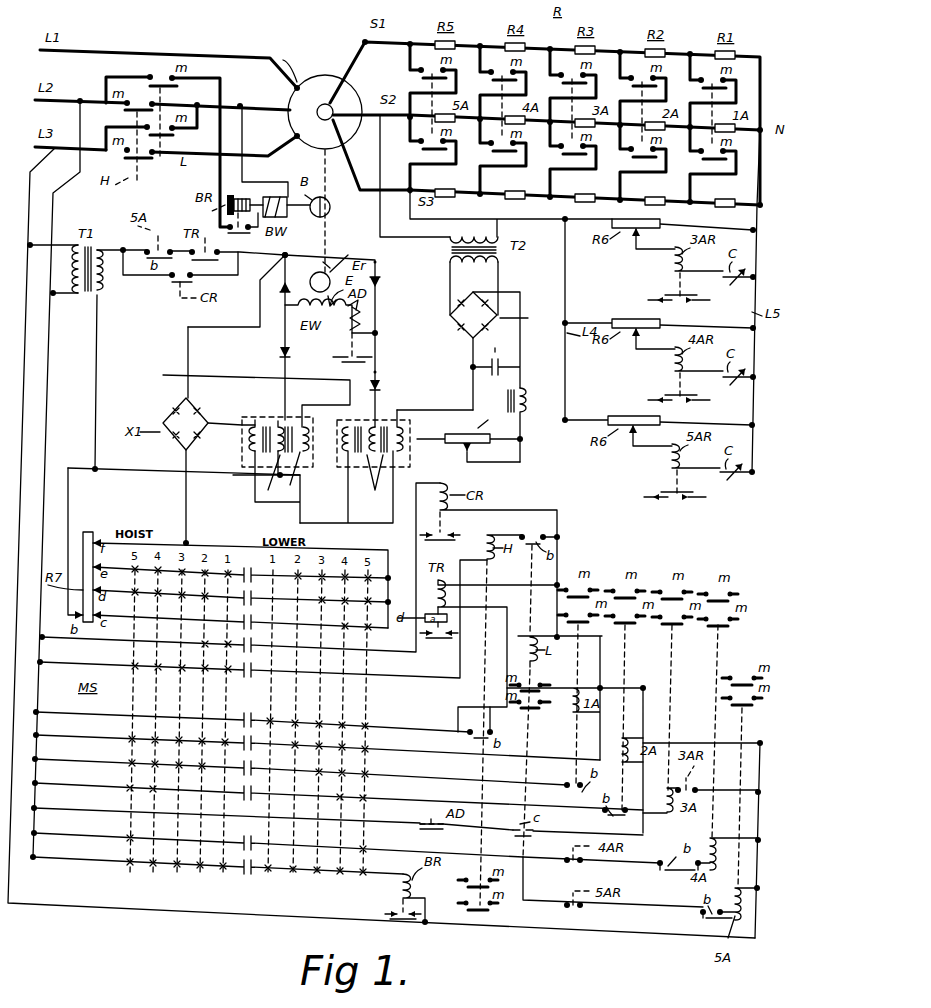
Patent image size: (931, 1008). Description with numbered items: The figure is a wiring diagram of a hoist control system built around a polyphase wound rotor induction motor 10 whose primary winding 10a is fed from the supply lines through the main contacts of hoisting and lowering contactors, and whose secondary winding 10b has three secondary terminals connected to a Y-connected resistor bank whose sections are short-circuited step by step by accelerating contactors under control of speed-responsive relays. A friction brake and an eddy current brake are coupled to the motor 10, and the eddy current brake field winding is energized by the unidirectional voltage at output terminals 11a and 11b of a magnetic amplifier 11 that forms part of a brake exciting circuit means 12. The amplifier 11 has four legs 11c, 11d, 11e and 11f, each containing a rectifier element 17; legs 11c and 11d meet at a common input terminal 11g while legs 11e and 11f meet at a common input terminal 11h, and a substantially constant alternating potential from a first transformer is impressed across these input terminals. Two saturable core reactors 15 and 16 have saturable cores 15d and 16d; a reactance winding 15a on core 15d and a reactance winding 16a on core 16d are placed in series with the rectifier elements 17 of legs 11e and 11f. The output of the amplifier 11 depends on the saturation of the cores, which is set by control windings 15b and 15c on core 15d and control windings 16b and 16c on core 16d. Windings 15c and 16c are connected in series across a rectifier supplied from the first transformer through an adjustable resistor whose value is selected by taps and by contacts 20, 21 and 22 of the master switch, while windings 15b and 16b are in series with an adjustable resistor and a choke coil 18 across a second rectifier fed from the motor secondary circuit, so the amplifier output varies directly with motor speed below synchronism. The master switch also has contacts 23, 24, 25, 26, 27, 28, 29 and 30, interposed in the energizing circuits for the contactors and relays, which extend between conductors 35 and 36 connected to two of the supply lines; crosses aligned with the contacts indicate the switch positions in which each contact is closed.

The polyphase wound rotor induction motor 10 is at (328, 72).
The primary winding 10a is at (295, 63).
The secondary winding 10b is at (333, 107).
The magnetic amplifier 11 is at (330, 341).
The output terminal 11a is at (268, 332).
The output terminal 11b is at (378, 335).
The leg 11c is at (288, 268).
The leg 11d is at (378, 266).
The leg 11e is at (283, 375).
The leg 11f is at (378, 372).
The input terminal 11g is at (288, 253).
The input terminal 11h is at (290, 477).
The brake exciting circuit means 12 is at (484, 362).
The saturable core reactor 15 is at (276, 453).
The reactance winding 15a is at (278, 420).
The control winding 15b is at (303, 420).
The control winding 15c is at (255, 432).
The saturable core 15d is at (250, 478).
The saturable core reactor 16 is at (386, 462).
The reactance winding 16a is at (410, 412).
The control winding 16b is at (405, 440).
The control winding 16c is at (346, 475).
The saturable core 16d is at (371, 473).
The rectifier element 17 is at (278, 300).
The choke coil 18 is at (525, 405).
The master switch contacts 20 is at (250, 580).
The master switch contacts 21 is at (250, 603).
The master switch contacts 22 is at (250, 627).
The master switch contacts 23 is at (250, 650).
The master switch contacts 24 is at (250, 675).
The master switch contacts 25 is at (250, 725).
The master switch contacts 26 is at (250, 748).
The master switch contacts 27 is at (250, 773).
The master switch contacts 28 is at (250, 798).
The master switch contacts 29 is at (250, 848).
The master switch contacts 30 is at (250, 872).
The conductor 35 is at (46, 345).
The conductor 36 is at (30, 300).